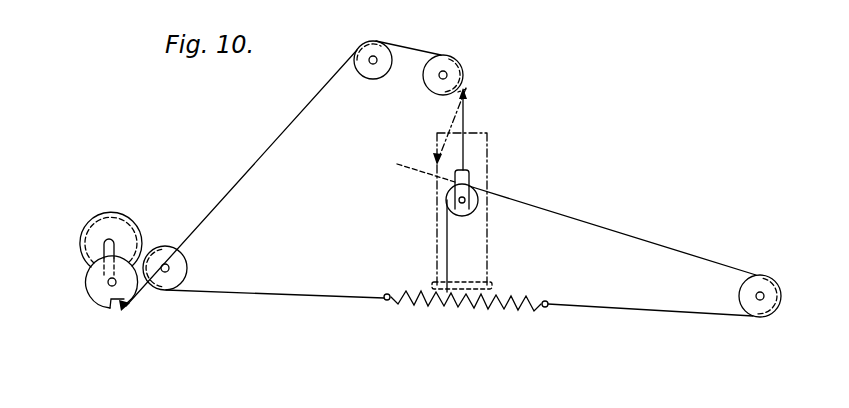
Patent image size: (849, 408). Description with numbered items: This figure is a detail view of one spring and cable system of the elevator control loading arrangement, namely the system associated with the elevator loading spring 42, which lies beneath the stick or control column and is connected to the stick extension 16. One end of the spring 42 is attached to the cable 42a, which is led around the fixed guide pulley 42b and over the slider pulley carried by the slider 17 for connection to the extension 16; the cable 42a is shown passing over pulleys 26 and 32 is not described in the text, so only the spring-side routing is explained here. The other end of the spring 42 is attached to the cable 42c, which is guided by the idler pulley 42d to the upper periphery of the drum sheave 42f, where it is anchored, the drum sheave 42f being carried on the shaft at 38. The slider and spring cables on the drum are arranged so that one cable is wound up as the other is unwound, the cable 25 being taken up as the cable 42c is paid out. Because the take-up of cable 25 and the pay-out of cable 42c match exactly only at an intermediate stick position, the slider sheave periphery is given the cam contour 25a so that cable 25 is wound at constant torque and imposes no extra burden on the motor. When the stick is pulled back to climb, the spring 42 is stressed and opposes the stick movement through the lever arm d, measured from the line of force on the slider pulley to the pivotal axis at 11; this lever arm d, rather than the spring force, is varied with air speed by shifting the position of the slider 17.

The pulley 32 is at (380, 42).
The pulley 26 is at (453, 57).
The pivotal axis 11 is at (466, 89).
The lever arm d is at (447, 124).
The cable 25 is at (464, 117).
The slider 17 is at (469, 183).
The stick extension 16 is at (488, 240).
The cable 42a is at (561, 216).
The fixed guide pulley 42b is at (757, 277).
The elevator loading spring 42 is at (461, 306).
The cable 42c is at (323, 293).
The idler pulley 42d is at (187, 264).
The drum sheave 42f is at (100, 211).
The shaft 38 is at (108, 282).
The cam surface contour 25a is at (98, 292).